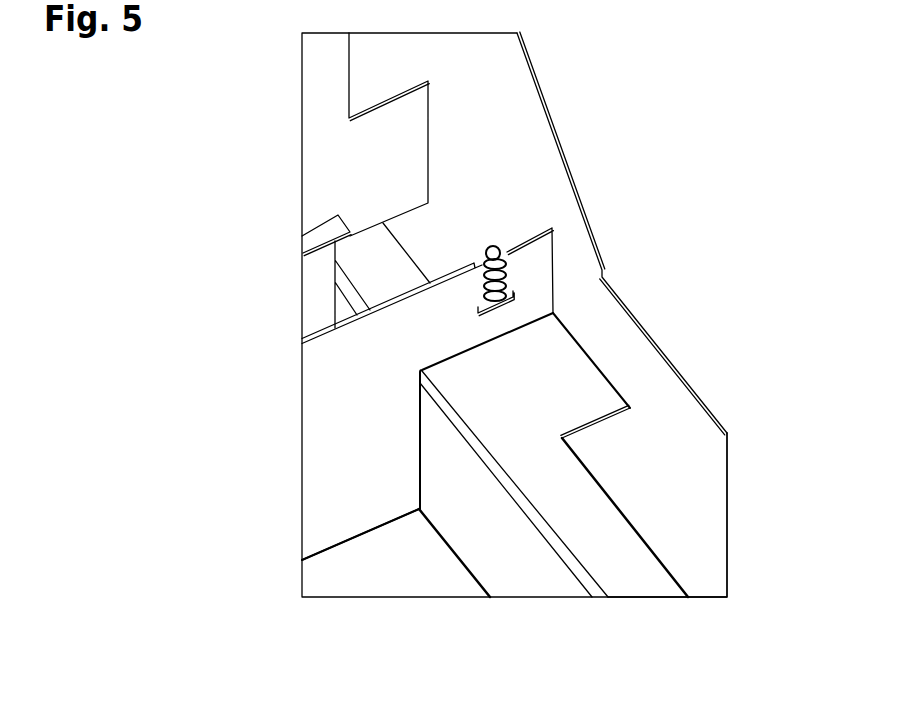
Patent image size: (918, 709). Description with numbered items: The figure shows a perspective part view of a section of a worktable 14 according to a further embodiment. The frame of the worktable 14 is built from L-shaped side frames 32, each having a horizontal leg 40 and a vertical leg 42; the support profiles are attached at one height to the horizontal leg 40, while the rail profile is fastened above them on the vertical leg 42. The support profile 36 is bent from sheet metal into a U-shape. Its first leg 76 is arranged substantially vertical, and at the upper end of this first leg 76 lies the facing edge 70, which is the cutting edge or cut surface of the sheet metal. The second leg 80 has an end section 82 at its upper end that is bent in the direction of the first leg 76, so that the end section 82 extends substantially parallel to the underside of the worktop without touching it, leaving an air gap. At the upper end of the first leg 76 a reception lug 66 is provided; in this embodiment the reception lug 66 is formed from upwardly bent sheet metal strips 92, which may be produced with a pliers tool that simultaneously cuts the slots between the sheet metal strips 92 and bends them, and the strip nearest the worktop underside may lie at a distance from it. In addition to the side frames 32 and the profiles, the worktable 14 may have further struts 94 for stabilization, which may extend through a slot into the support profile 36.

The worktable 14 is at (645, 128).
The vertical leg 42 is at (547, 175).
The end section 82 is at (322, 233).
The second leg 80 is at (313, 285).
The facing edge 70 is at (317, 327).
The sheet metal strips 92 is at (497, 250).
The support profile 36 is at (327, 483).
The first leg 76 is at (327, 417).
The struts 94 is at (570, 387).
The reception lug 66 is at (528, 317).
The side frame 32 is at (657, 467).
The horizontal leg 40 is at (705, 520).